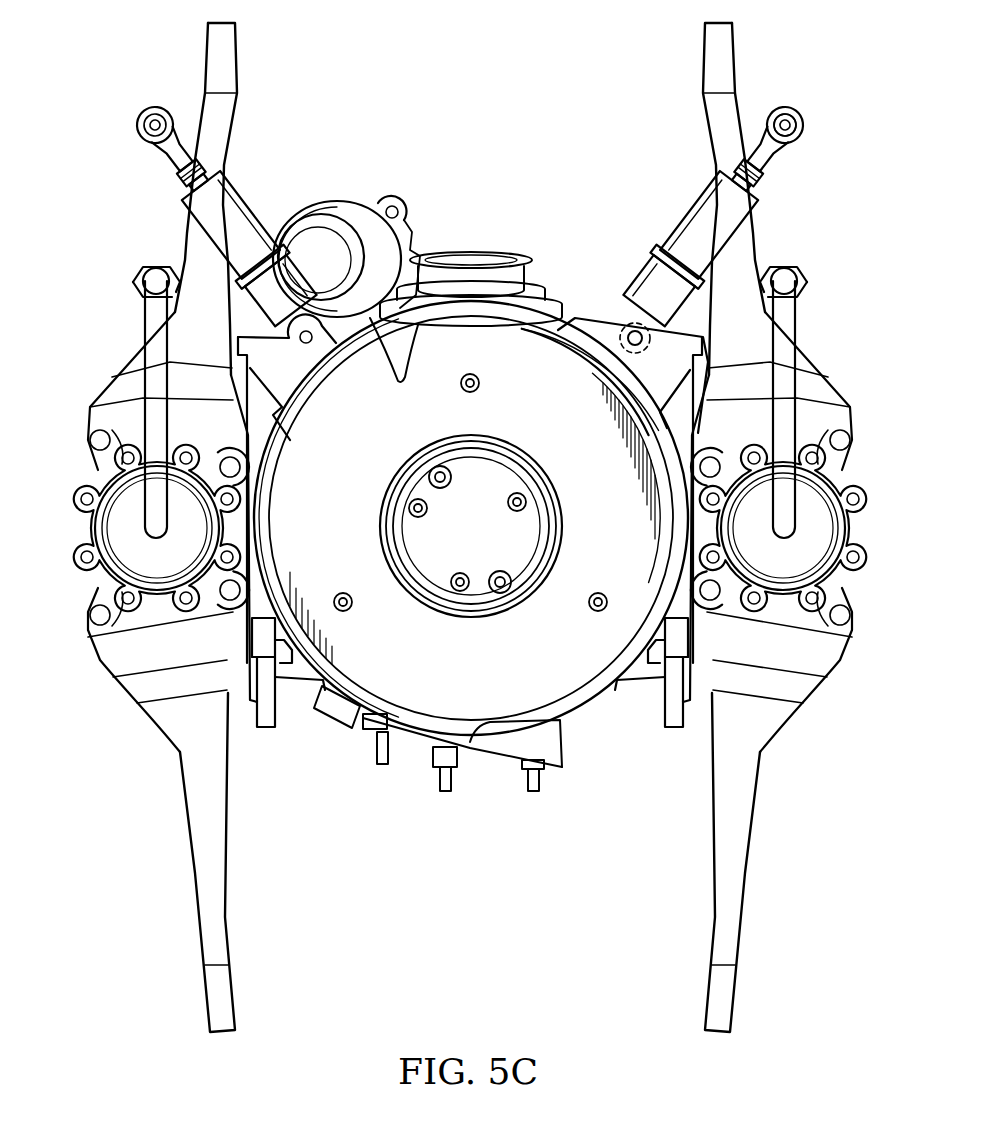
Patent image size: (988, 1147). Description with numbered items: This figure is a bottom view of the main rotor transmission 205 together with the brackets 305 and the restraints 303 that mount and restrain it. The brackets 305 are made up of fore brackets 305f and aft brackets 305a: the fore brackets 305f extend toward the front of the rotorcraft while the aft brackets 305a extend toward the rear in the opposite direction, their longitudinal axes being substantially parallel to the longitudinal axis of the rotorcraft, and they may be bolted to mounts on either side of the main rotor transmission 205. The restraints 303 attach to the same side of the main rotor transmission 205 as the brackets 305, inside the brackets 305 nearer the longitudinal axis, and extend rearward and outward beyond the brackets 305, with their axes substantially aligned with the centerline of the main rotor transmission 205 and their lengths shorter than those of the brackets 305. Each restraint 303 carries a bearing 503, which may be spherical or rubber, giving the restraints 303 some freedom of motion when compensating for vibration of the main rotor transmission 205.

The main rotor transmission 205 is at (420, 743).
The restraints 303 is at (241, 197).
The brackets 305 is at (83, 437).
The aft brackets 305a is at (207, 60).
The fore brackets 305f is at (190, 888).
The bearings 503 is at (803, 125).